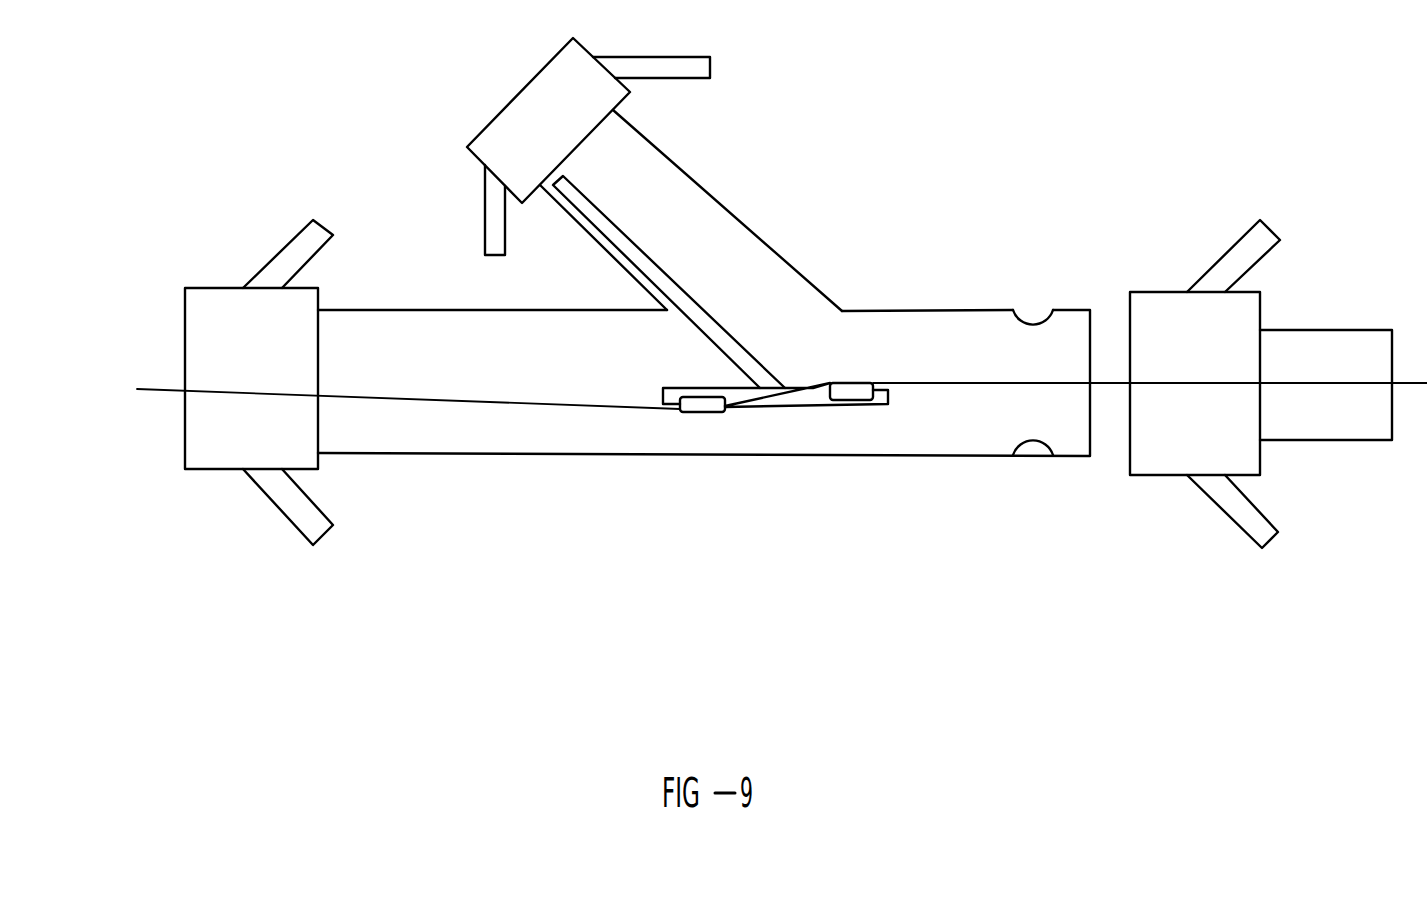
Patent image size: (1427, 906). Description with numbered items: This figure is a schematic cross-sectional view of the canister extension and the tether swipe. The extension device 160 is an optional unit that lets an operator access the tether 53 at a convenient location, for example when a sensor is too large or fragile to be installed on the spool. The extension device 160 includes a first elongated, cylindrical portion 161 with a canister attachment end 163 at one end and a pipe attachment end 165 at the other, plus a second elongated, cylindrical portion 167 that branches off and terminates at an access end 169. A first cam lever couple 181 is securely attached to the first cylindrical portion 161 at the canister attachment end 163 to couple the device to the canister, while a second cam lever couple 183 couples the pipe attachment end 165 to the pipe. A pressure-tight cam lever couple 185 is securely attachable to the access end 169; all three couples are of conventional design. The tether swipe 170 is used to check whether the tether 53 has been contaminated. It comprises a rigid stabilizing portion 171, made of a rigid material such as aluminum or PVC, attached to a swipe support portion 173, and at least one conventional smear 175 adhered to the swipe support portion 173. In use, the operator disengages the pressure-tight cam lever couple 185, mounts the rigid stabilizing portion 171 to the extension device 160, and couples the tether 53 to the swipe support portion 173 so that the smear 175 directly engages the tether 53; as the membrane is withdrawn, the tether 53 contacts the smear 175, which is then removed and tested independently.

The tether 53 is at (448, 440).
The extension device 160 is at (544, 637).
The first elongated, cylindrical portion 161 is at (592, 457).
The canister attachment end 163 is at (407, 315).
The pipe attachment end 165 is at (1053, 313).
The second elongated, cylindrical portion 167 is at (712, 193).
The access end 169 is at (638, 148).
The tether swipe 170 is at (800, 344).
The rigid stabilizing portion 171 is at (693, 313).
The swipe support portion 173 is at (800, 400).
The smear 175 is at (700, 412).
The first cam lever couple 181 is at (218, 458).
The second cam lever couple 183 is at (1248, 308).
The pressure-tight cam lever couple 185 is at (528, 98).